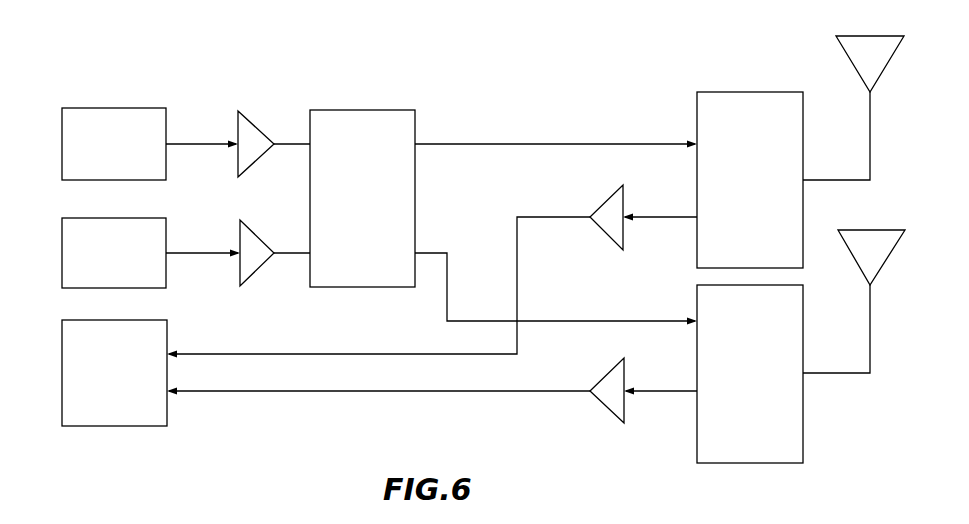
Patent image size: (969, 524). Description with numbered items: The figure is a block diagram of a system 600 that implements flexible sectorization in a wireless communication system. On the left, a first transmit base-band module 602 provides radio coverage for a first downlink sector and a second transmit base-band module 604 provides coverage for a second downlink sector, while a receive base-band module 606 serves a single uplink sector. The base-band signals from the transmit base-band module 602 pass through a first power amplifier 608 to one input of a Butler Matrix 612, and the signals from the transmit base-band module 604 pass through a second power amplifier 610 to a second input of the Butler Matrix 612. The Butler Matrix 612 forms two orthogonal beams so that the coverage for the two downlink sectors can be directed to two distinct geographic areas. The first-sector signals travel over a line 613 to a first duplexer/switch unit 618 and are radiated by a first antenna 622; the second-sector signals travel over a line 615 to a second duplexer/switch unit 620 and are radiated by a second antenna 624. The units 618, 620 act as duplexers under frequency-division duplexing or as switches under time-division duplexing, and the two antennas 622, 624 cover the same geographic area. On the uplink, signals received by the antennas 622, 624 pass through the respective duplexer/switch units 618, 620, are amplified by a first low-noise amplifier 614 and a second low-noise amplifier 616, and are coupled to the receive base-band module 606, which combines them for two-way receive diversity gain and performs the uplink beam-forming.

The system 600 is at (72, 79).
The transmit base-band module 602 is at (157, 108).
The transmit base-band module 604 is at (163, 218).
The receive base-band module 606 is at (167, 420).
The first power amplifier 608 is at (258, 128).
The second power amplifier 610 is at (253, 275).
The Butler Matrix 612 is at (415, 120).
The line 613 is at (513, 143).
The low-noise amplifier 614 is at (623, 202).
The line 615 is at (558, 320).
The low-noise amplifier 616 is at (624, 408).
The first duplexer/switch unit 618 is at (723, 92).
The second duplexer/switch unit 620 is at (805, 417).
The first antenna 622 is at (850, 62).
The second antenna 624 is at (860, 228).